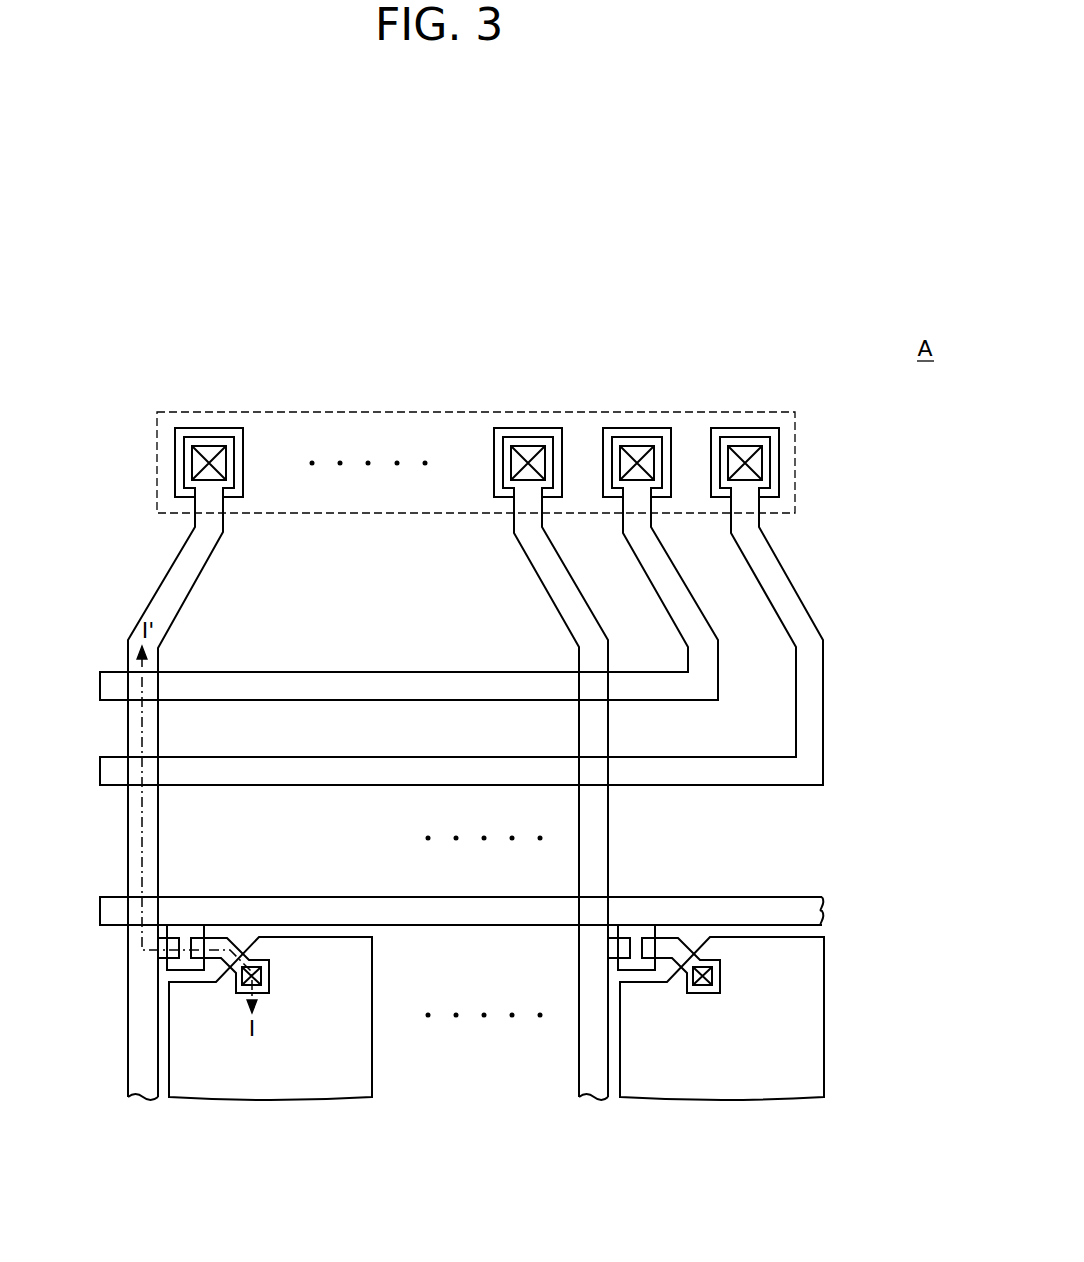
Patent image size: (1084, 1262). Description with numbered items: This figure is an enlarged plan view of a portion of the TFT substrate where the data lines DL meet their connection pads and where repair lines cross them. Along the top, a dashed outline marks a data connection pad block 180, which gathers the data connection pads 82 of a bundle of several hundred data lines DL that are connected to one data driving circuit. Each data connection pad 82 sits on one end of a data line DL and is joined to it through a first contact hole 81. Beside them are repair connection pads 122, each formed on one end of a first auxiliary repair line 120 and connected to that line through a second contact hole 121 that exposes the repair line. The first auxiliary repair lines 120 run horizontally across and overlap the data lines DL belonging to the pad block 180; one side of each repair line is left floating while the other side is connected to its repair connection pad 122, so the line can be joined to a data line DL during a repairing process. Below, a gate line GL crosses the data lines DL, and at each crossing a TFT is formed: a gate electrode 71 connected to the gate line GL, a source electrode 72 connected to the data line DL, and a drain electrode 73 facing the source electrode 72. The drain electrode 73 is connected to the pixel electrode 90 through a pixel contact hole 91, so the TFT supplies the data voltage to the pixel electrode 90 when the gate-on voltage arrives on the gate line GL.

The gate electrode 71 is at (185, 933).
The source electrode 72 is at (160, 958).
The drain electrode 73 is at (213, 937).
The first contact hole 81 is at (200, 446).
The data connection pad 82 is at (218, 428).
The pixel electrode 90 is at (372, 1053).
The pixel contact hole 91 is at (258, 965).
The first auxiliary repair line 120 is at (718, 672).
The second contact hole 121 is at (628, 446).
The repair connection pad 122 is at (645, 428).
The data connection pad block 180 is at (386, 412).
The data line DL is at (158, 808).
The gate line GL is at (767, 897).